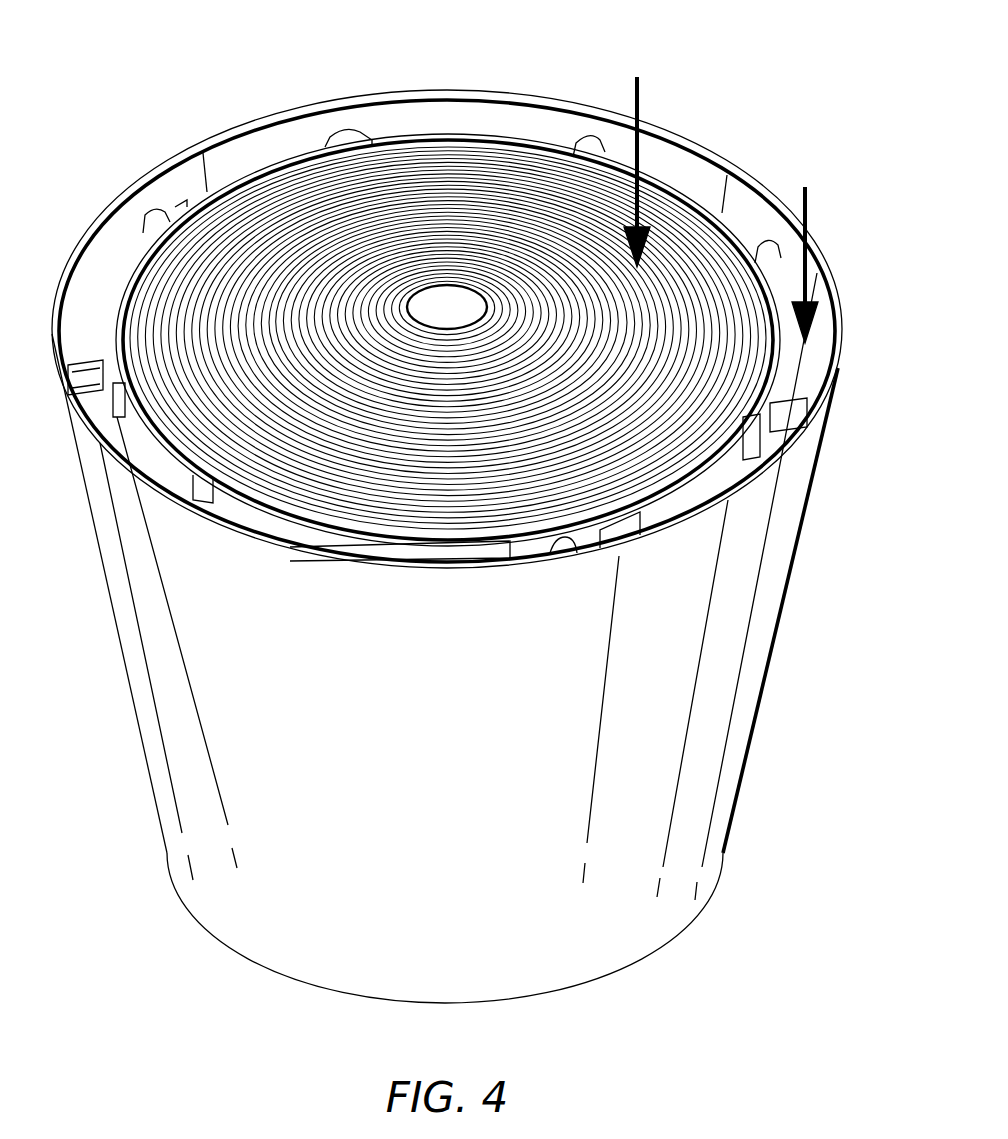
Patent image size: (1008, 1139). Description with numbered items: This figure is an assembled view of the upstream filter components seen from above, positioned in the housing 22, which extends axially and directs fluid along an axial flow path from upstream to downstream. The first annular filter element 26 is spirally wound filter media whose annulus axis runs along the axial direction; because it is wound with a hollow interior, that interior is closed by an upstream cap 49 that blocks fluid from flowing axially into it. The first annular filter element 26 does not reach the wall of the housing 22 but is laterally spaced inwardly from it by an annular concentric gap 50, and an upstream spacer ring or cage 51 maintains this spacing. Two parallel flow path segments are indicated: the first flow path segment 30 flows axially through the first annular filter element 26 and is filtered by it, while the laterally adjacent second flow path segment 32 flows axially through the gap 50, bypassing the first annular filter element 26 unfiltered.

The housing 22 is at (456, 90).
The first annular filter element 26 is at (262, 205).
The first flow path segment 30 is at (640, 102).
The second flow path segment 32 is at (808, 208).
The upstream cap 49 is at (447, 307).
The annular concentric gap 50 is at (120, 245).
The upstream spacer ring or cage 51 is at (418, 128).